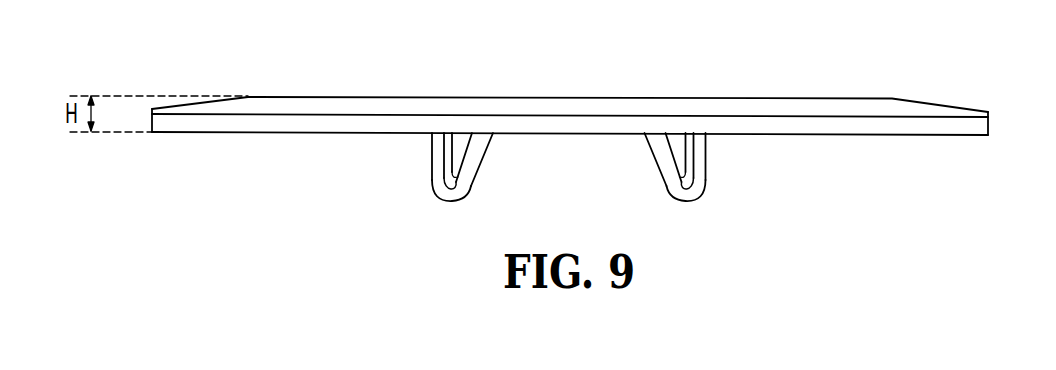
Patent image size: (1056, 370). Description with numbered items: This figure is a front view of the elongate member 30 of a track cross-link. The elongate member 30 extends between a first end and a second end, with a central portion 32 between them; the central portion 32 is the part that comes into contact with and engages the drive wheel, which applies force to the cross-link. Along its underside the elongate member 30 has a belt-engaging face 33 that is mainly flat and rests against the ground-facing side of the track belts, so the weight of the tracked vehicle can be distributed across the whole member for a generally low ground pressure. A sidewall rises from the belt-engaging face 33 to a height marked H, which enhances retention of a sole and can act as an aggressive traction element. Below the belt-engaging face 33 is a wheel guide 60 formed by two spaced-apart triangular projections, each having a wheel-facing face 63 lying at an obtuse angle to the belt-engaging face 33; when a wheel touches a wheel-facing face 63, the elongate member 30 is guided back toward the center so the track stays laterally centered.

The elongate member 30 is at (576, 138).
The central portion 32 is at (585, 127).
The belt-engaging face 33 is at (312, 123).
The wheel guide 60 is at (576, 191).
The wheel-facing face 63 is at (483, 158).